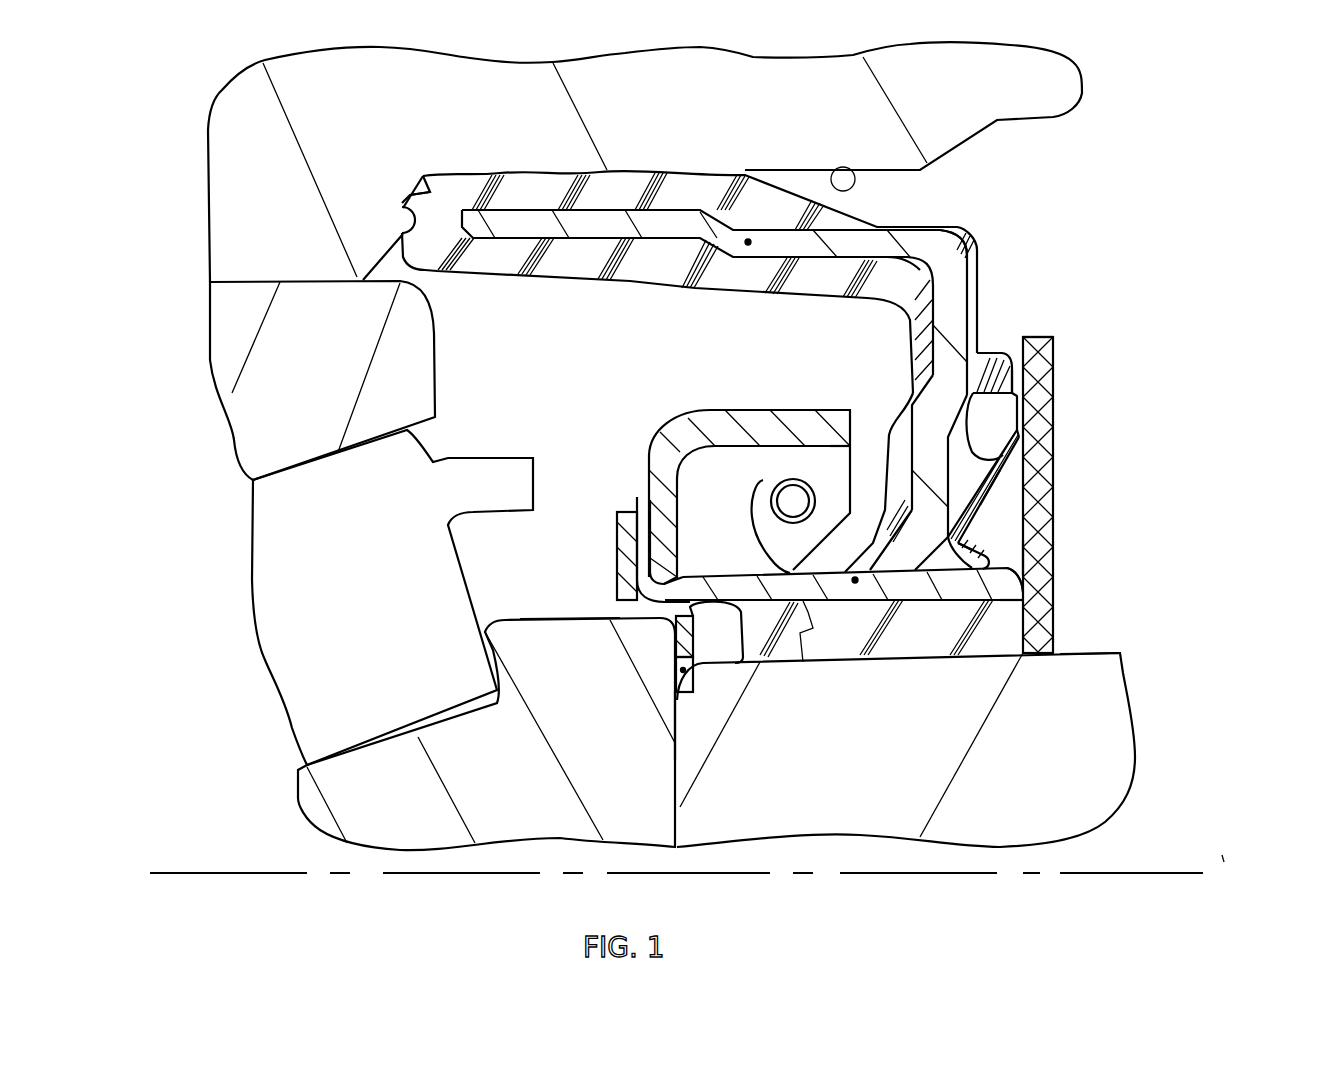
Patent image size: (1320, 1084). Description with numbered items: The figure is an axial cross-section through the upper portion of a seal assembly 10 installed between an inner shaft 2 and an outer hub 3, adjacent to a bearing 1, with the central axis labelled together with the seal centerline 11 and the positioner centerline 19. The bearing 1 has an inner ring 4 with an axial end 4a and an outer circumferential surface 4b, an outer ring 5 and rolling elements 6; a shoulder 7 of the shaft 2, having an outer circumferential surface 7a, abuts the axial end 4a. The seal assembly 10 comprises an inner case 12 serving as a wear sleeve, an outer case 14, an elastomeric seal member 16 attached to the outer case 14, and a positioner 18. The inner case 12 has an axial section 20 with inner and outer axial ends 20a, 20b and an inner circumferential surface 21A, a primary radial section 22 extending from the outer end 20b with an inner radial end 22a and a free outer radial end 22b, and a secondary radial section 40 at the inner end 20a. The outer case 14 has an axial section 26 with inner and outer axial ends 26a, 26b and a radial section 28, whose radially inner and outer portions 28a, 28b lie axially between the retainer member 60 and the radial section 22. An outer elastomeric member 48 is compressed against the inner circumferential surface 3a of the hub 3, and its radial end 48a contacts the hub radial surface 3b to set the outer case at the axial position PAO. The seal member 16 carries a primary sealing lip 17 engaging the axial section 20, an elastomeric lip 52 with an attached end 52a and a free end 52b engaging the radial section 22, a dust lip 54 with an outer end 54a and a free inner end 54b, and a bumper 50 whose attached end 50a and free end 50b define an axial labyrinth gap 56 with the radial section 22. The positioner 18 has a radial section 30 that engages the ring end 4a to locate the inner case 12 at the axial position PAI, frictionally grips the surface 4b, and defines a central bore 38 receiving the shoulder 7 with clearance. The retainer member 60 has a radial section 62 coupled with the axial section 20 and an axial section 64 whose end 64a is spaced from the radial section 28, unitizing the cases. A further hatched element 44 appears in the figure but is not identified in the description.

The bearing 1 is at (498, 392).
The shaft 2 is at (1132, 735).
The outer hub 3 is at (210, 133).
The inner circumferential surface of the hub 3a is at (846, 167).
The radial surface of the hub 3b is at (400, 231).
The bearing inner ring 4 is at (298, 804).
The axial end of the bearing inner ring 4a is at (680, 765).
The outer circumferential surface of the bearing inner ring 4b is at (580, 617).
The outer ring 5 is at (226, 387).
The rolling elements 6 is at (275, 561).
The shoulder 7 is at (1097, 710).
The outer circumferential surface of the shoulder 7a is at (1103, 650).
The seal assembly 10 is at (1095, 259).
The centerline of the seal assembly 11 is at (1203, 873).
The inner annular case 12 is at (1123, 388).
The outer annular case 14 is at (1003, 213).
The annular elastomeric seal member 16 is at (903, 398).
The primary sealing lip 17 is at (755, 492).
The annular positioner 18 is at (600, 550).
The centerline of the positioner 19 is at (1223, 858).
The axial section of the inner case 20 is at (950, 588).
The inner axial end of the inner case axial section 20a is at (665, 590).
The outer axial end of the inner case axial section 20b is at (1045, 590).
The inner circumferential surface of the inner case axial section 21A is at (803, 640).
The primary radial section of the inner case 22 is at (1052, 428).
The inner radial end of the primary radial section 22a is at (1030, 557).
The outer radial end of the primary radial section 22b is at (1050, 344).
The axial section of the outer case 26 is at (661, 208).
The inner axial end of the outer case axial section 26a is at (483, 230).
The outer axial end of the outer case axial section 26b is at (907, 233).
The radial section of the outer case 28 is at (967, 308).
The radially inner portion of the outer case radial section 28a is at (932, 520).
The radially outer portion of the outer case radial section 28b is at (953, 278).
The radial section of the positioner 30 is at (677, 637).
The central bore 38 is at (680, 672).
The secondary radial section of the inner case 40 is at (645, 497).
The elastomer body 44 is at (985, 640).
The outer annular elastomeric member 48 is at (548, 172).
The radial end of the outer elastomeric member 48a is at (408, 203).
The annular elastomeric bumper 50 is at (998, 352).
The first axial end of the bumper 50a is at (930, 347).
The second free end of the bumper 50b is at (1020, 376).
The annular elastomeric lip 52 is at (1020, 463).
The first end of the annular lip 52a is at (985, 497).
The second free end of the annular lip 52b is at (1021, 440).
The radial dust lip 54 is at (990, 546).
The outer radial end of the dust lip 54a is at (966, 530).
The inner radial end of the dust lip 54b is at (1028, 604).
The axial labyrinth gap 56 is at (1022, 397).
The annular retainer member 60 is at (735, 405).
The radial section of the retainer member 62 is at (658, 470).
The axial section of the retainer member 64 is at (773, 410).
The axial end of the retainer axial section 64a is at (843, 410).
The desired axial position of the outer case PAO is at (748, 239).
The desired axial position of the inner case PAI is at (855, 584).